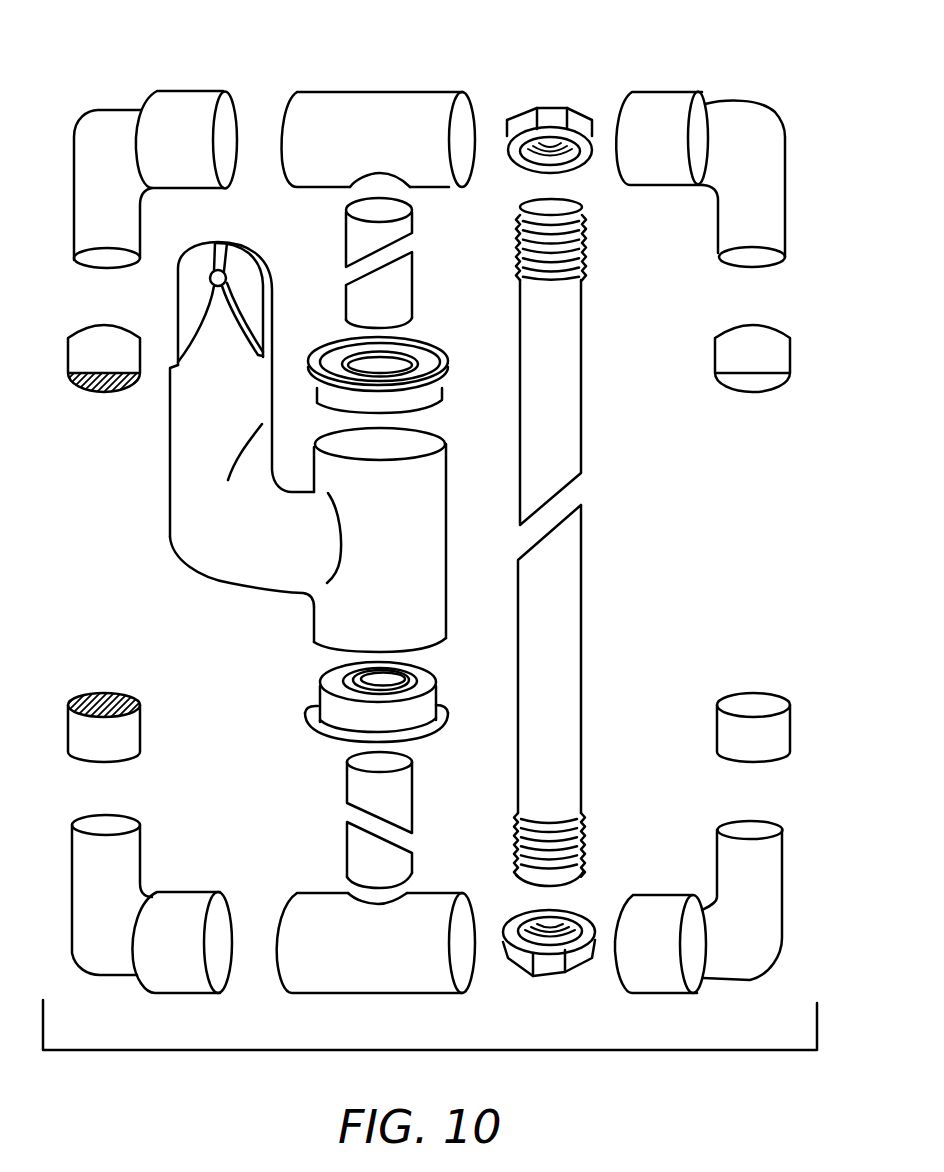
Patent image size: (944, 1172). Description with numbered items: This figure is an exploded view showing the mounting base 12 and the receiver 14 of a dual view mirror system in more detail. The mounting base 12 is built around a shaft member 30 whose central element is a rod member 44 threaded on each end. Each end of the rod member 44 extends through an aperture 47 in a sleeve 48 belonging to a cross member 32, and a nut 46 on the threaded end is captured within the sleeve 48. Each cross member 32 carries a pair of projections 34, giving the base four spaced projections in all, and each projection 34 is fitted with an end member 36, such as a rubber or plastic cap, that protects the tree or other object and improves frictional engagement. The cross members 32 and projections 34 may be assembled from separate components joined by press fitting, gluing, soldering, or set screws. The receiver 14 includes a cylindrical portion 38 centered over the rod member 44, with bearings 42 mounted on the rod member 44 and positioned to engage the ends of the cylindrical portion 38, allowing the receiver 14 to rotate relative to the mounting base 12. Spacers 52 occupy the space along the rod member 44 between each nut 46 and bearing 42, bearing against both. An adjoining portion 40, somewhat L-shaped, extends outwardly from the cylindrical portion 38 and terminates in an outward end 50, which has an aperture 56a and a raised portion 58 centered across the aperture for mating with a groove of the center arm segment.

The mounting base 12 is at (440, 1050).
The receiver 14 is at (201, 598).
The shaft member 30 is at (678, 547).
The cross member 32 is at (790, 86).
The projection 34 is at (140, 218).
The end member 36 is at (104, 394).
The cylindrical portion 38 is at (446, 535).
The adjoining portion 40 is at (170, 537).
The bearing 42 is at (443, 352).
The rod member 44 is at (582, 403).
The nut 46 is at (548, 108).
The aperture 47 is at (385, 175).
The sleeve 48 is at (388, 92).
The outward end 50 is at (236, 231).
The spacer 52 is at (421, 269).
The aperture 56a is at (227, 276).
The raised portion 58 is at (236, 322).